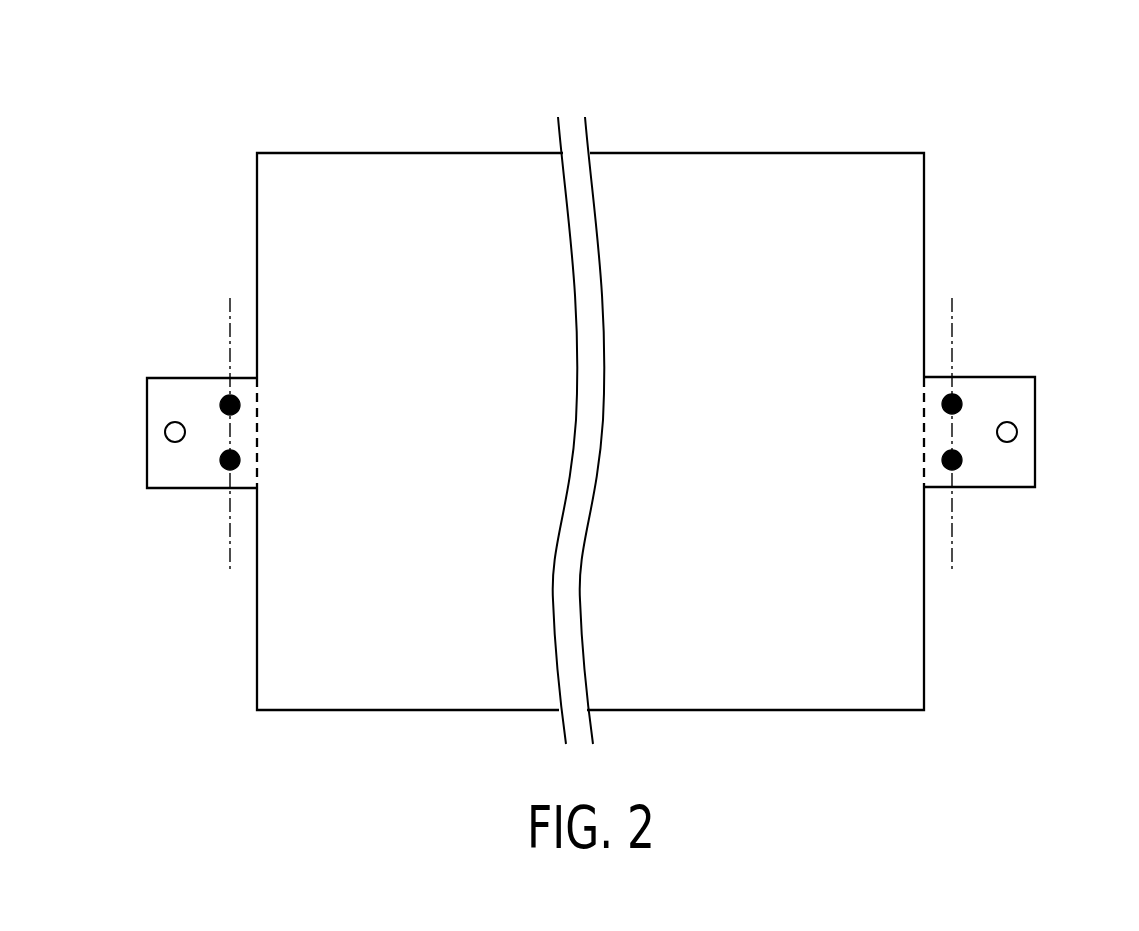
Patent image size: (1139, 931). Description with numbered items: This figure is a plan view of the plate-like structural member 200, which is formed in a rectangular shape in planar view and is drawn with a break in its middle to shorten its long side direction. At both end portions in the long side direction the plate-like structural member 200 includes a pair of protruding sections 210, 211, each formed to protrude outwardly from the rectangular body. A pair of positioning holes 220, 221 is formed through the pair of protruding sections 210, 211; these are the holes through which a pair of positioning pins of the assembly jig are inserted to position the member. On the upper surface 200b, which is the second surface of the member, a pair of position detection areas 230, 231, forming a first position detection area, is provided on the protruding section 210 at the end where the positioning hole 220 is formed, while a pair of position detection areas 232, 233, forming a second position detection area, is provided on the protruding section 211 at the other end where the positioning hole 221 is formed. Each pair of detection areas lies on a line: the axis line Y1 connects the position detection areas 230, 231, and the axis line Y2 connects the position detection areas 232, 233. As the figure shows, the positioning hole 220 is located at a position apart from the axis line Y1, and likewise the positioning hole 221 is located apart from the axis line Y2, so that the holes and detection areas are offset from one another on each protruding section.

The plate-like structural member 200 is at (976, 97).
The upper surface 200b is at (391, 175).
The protruding section 210 is at (177, 378).
The protruding section 211 is at (1007, 377).
The positioning hole 220 is at (165, 432).
The positioning hole 221 is at (1018, 432).
The position detection area 230 is at (240, 405).
The position detection area 231 is at (240, 460).
The position detection area 232 is at (942, 404).
The position detection area 233 is at (942, 460).
The axis line Y1 is at (228, 535).
The axis line Y2 is at (953, 535).